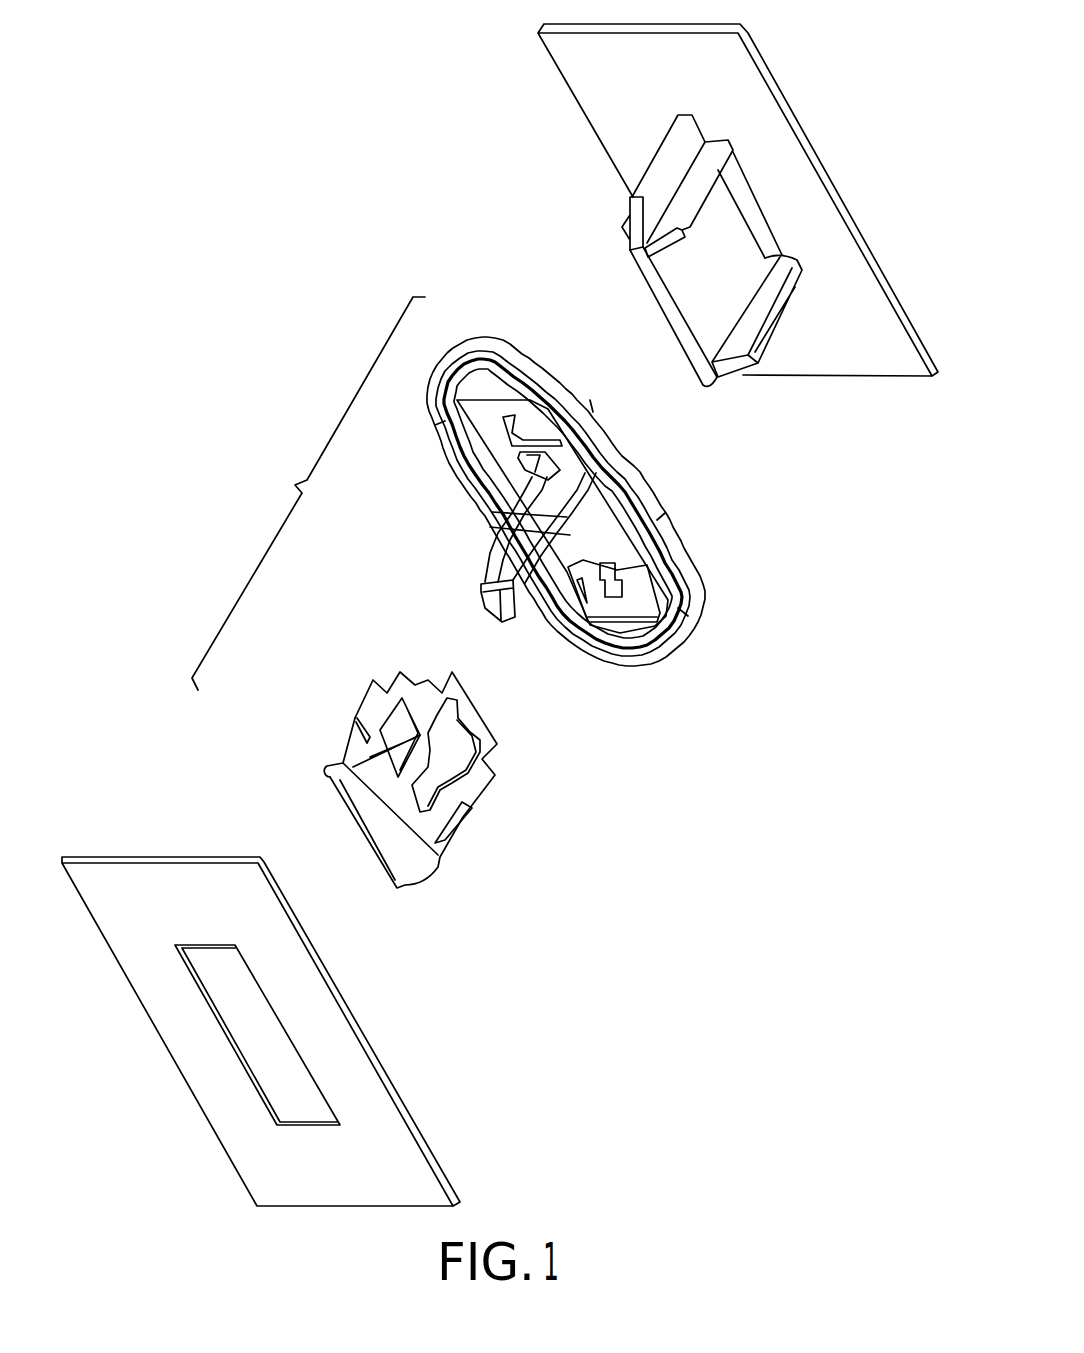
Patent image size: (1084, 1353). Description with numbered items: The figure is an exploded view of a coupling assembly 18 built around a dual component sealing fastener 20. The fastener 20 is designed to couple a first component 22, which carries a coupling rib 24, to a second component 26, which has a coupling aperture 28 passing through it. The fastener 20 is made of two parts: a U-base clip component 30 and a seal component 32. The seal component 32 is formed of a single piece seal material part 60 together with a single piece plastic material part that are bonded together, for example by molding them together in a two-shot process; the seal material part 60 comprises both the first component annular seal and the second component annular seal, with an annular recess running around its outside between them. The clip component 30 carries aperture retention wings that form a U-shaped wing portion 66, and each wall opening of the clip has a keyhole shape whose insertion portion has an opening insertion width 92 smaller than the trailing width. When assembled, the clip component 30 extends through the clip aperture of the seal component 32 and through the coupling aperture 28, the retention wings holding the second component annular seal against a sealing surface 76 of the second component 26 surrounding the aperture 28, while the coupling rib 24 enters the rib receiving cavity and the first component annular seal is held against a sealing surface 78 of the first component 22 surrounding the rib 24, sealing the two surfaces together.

The coupling assembly 18 is at (745, 915).
The dual component sealing fastener 20 is at (308, 493).
The first component 22 is at (615, 97).
The coupling rib 24 is at (672, 315).
The second component 26 is at (147, 955).
The coupling aperture 28 is at (252, 1025).
The U-base clip component 30 is at (365, 697).
The seal component 32 is at (428, 505).
The single piece seal material part 60 is at (660, 508).
The U-shaped wing portion 66 is at (492, 568).
The sealing surface of the second component 76 is at (360, 1027).
The sealing surface of the first component 78 is at (857, 340).
The opening insertion width 92 is at (588, 633).